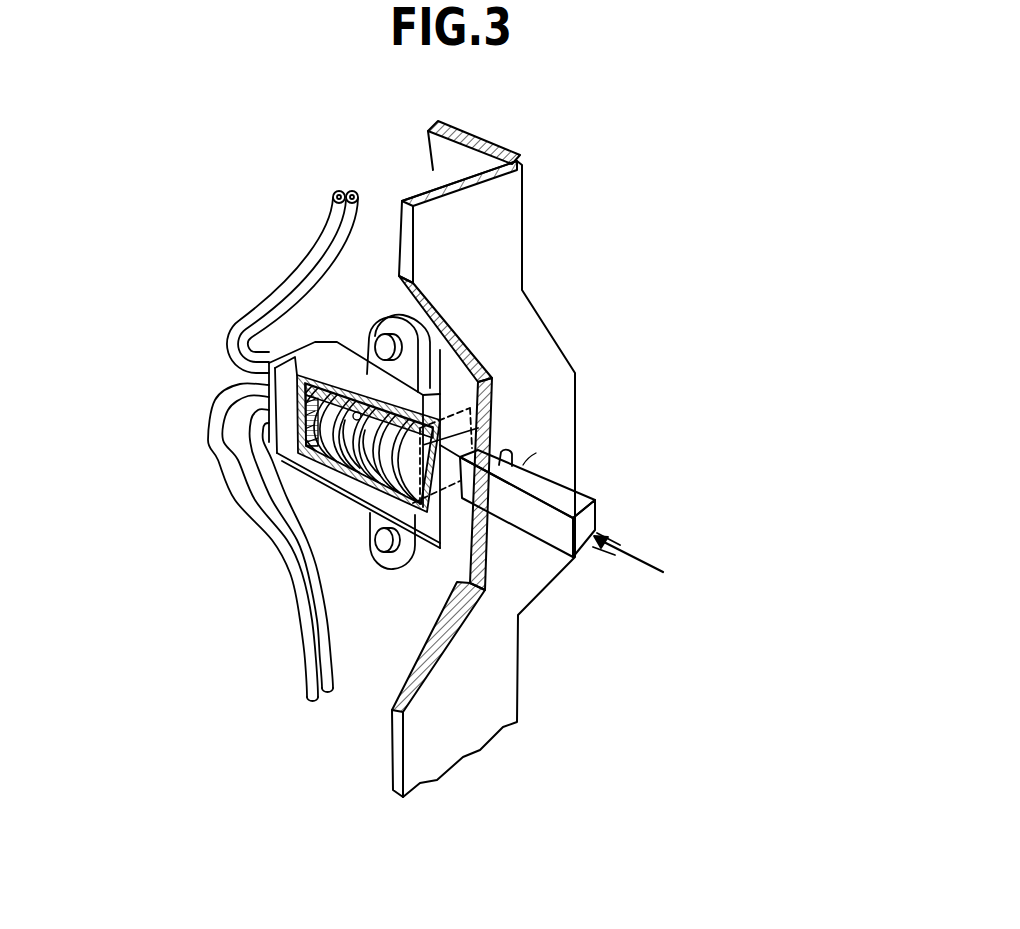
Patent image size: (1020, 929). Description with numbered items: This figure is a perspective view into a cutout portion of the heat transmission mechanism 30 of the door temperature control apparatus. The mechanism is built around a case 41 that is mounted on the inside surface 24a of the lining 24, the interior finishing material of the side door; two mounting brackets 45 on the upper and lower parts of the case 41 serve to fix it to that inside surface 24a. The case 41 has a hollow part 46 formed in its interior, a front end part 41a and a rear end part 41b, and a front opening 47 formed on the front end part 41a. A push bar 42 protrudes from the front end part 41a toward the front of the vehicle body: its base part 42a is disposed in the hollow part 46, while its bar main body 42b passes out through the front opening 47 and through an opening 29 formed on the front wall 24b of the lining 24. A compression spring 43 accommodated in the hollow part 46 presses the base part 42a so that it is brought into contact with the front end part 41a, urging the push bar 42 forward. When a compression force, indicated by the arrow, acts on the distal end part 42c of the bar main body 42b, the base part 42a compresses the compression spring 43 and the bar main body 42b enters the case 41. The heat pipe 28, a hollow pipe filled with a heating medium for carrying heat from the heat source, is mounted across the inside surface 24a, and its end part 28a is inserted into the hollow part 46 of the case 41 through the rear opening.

The lining 24 is at (415, 434).
The inside surface 24a is at (345, 520).
The front wall 24b is at (498, 222).
The heat pipe 28 is at (223, 530).
The end part 28a is at (280, 452).
The opening 29 is at (523, 465).
The heat transmission mechanism 30 is at (306, 326).
The case 41 is at (334, 465).
The front end part 41a is at (470, 600).
The rear end part 41b is at (290, 345).
The push bar 42 is at (603, 472).
The base part 42a is at (487, 400).
The bar main body 42b is at (552, 486).
The distal end part 42c is at (595, 547).
The compression spring 43 is at (387, 410).
The mounting brackets 45 is at (413, 350).
The hollow part 46 is at (366, 508).
The front opening 47 is at (460, 482).